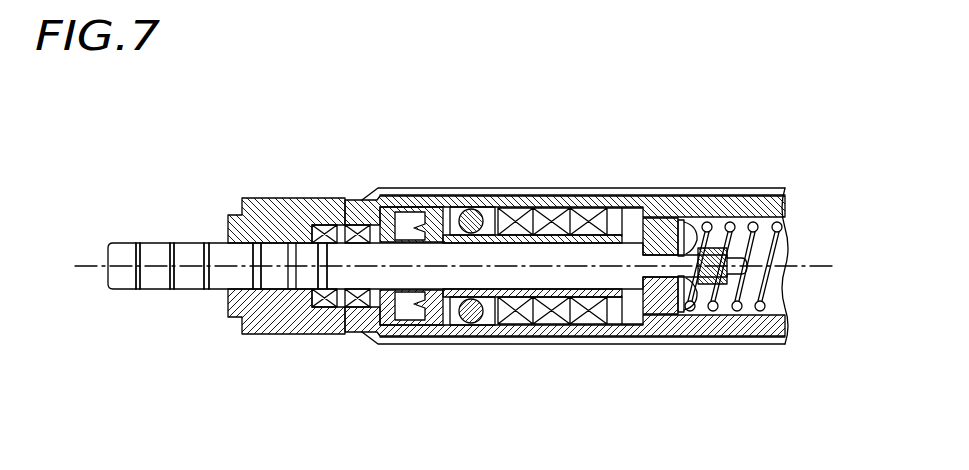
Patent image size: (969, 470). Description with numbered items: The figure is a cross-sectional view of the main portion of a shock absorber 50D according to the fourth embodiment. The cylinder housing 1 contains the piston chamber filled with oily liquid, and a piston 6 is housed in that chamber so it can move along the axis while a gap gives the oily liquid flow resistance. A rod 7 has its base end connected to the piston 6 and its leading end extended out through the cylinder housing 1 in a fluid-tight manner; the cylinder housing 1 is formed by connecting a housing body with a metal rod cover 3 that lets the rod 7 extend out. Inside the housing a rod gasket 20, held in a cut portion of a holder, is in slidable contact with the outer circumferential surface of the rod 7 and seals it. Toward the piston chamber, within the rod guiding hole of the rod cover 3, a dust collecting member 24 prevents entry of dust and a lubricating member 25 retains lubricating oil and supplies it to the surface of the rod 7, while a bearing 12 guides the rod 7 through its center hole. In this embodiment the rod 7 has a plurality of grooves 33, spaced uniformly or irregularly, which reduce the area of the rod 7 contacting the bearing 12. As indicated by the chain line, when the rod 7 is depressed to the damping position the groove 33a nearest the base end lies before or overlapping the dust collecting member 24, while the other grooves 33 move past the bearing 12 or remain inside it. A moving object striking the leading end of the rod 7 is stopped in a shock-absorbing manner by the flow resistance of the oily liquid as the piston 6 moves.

The shock absorber 50D is at (575, 203).
The cylinder housing 1 is at (628, 177).
The rod cover 3 is at (291, 258).
The grooves 33 is at (168, 252).
The groove nearest the base end of the rod 33a is at (320, 258).
The bearing 12 is at (238, 300).
The dust collecting member 24 is at (326, 304).
The lubricating member 25 is at (354, 312).
The rod gasket 20 is at (410, 318).
The rod 7 is at (473, 255).
The piston 6 is at (658, 300).